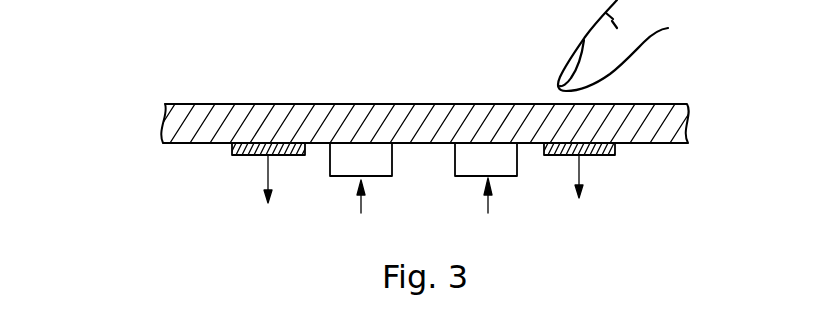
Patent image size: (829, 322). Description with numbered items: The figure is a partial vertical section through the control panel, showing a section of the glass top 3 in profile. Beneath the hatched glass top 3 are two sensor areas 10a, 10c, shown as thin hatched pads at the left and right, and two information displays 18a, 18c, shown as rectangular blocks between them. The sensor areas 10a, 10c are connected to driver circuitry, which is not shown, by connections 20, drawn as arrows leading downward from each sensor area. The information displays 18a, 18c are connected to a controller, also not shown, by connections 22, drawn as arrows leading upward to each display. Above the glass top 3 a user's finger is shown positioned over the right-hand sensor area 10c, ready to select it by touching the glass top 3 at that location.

The glass top 3 is at (688, 103).
The sensor area 10a is at (231, 156).
The sensor area 10c is at (617, 156).
The information display 18a is at (396, 156).
The information display 18c is at (455, 155).
The connection 20 is at (270, 178).
The connection 22 is at (363, 205).